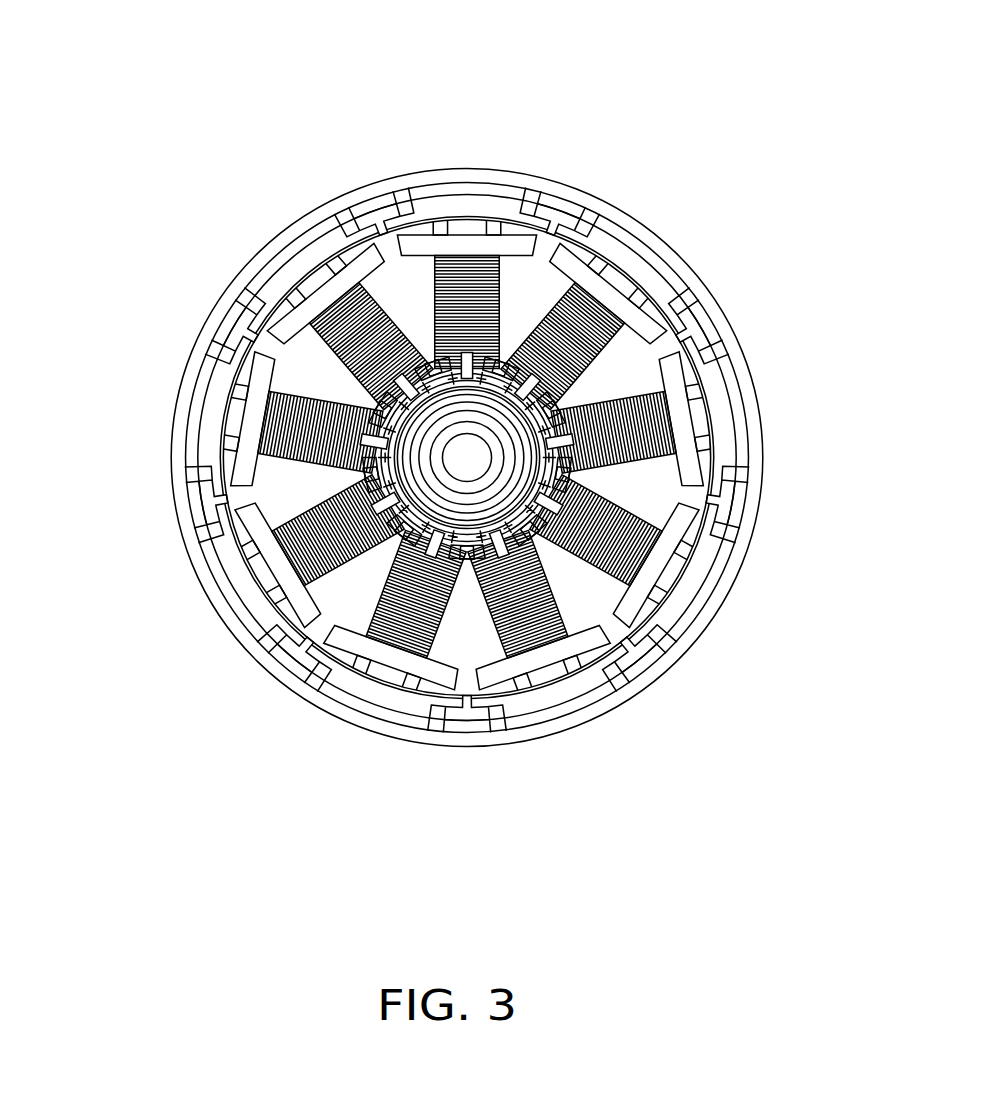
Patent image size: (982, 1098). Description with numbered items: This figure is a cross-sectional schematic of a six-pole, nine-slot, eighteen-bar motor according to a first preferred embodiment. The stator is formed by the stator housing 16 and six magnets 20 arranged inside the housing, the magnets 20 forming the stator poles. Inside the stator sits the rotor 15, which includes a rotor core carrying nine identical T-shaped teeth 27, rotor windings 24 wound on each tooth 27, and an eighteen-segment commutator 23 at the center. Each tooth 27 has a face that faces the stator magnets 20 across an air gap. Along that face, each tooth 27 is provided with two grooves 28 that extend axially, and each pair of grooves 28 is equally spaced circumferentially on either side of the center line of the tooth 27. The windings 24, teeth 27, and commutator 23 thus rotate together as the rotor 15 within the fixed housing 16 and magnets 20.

The rotor 15 is at (455, 407).
The stator housing 16 is at (218, 322).
The magnets 20 is at (217, 535).
The commutator 23 is at (367, 417).
The rotor windings 24 is at (580, 350).
The T-shaped teeth 27 is at (250, 417).
The grooves 28 is at (497, 230).